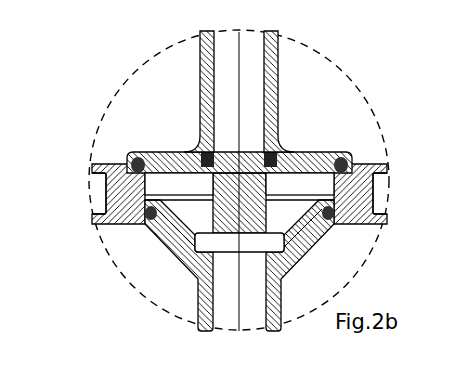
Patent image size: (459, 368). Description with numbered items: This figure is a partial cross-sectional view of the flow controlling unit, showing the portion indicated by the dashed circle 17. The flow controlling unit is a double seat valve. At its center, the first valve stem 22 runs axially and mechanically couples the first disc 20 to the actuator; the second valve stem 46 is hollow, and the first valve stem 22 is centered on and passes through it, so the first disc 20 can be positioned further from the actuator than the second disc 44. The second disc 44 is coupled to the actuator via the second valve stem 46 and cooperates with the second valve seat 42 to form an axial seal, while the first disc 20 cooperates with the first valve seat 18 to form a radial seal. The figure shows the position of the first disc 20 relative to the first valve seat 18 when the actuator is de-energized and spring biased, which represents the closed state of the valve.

The dashed circle 17 is at (132, 292).
The first valve seat 18 is at (105, 207).
The first disc 20 is at (163, 212).
The first valve stem 22 is at (228, 70).
The second valve seat 42 is at (105, 182).
The second disc 44 is at (163, 145).
The second valve stem 46 is at (200, 90).